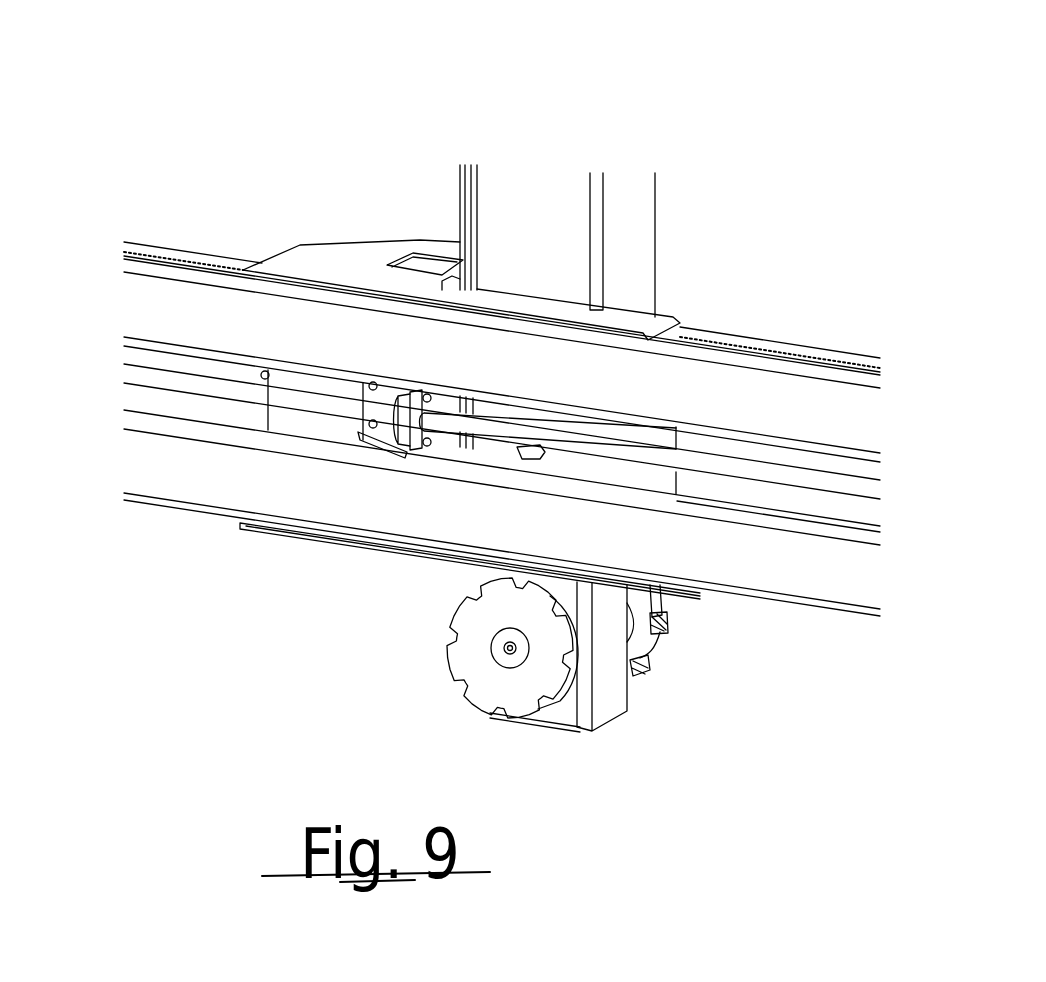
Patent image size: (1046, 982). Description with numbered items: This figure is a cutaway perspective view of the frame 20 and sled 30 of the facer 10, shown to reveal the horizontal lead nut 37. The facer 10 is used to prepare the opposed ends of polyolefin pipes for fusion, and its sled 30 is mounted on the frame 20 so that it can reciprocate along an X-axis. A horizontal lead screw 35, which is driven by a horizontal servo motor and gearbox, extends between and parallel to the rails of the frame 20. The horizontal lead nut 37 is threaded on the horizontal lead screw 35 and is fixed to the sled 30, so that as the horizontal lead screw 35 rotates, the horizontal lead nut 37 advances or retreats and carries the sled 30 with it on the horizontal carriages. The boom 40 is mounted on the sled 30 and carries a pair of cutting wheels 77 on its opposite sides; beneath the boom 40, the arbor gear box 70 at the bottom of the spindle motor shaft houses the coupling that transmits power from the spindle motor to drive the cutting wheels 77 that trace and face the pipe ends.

The facer 10 is at (309, 46).
The frame 20 is at (174, 247).
The sled 30 is at (356, 250).
The boom 40 is at (655, 226).
The horizontal lead screw 35 is at (147, 387).
The horizontal lead nut 37 is at (409, 445).
The cutting wheels 77 is at (468, 663).
The arbor gear box 70 is at (602, 702).